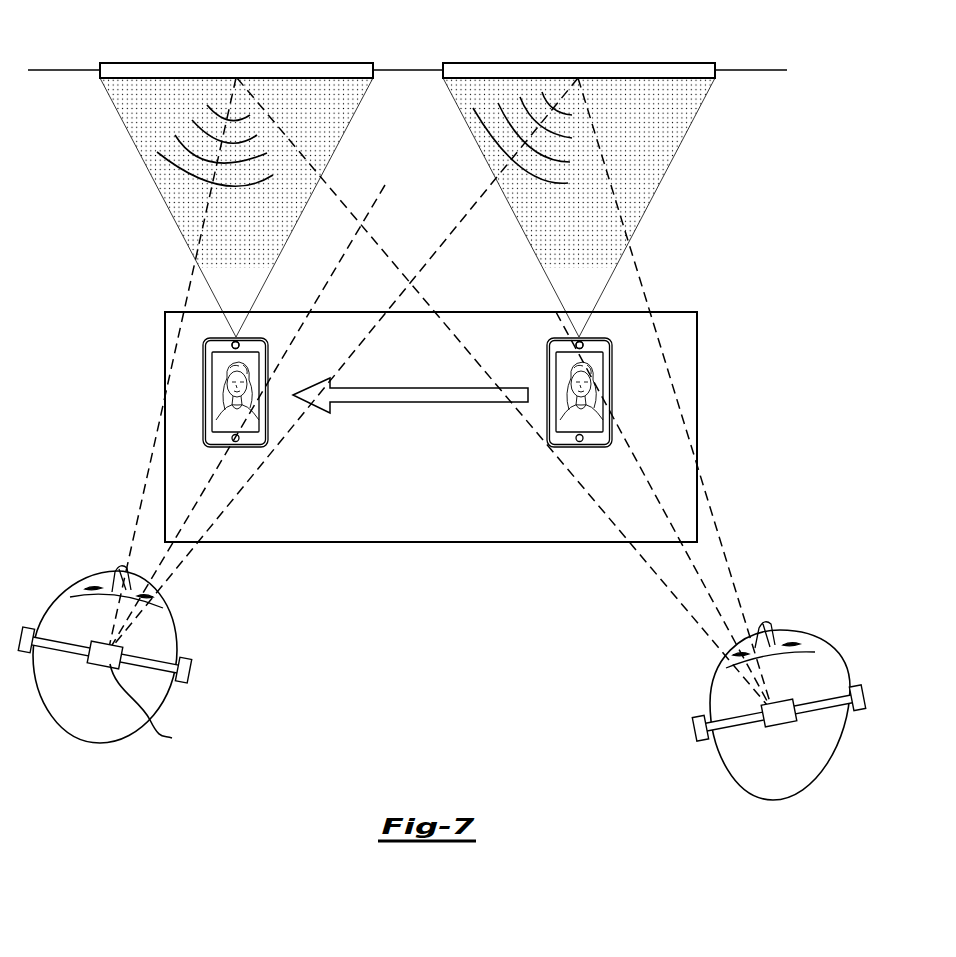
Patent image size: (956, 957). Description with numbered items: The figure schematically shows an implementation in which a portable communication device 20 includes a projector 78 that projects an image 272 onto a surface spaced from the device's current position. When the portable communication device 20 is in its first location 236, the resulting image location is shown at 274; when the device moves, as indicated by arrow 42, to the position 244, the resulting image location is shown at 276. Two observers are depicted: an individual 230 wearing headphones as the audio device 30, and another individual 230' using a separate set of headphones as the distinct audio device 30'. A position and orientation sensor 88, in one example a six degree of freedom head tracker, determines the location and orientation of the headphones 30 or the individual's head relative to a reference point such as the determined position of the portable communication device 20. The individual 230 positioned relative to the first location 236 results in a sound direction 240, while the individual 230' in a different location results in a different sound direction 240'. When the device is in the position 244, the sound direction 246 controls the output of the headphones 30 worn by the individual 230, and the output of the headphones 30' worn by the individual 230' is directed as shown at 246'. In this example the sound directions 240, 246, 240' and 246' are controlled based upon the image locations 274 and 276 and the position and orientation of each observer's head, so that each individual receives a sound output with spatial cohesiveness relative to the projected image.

The image 272 is at (152, 63).
The image location 276 is at (130, 88).
The image location 274 is at (677, 84).
The sound direction 246 is at (172, 365).
The sound direction 246' is at (282, 418).
The sound direction 240 is at (343, 365).
The sound direction 240' is at (680, 395).
The video projector 78 is at (237, 340).
The movement direction arrow 42 is at (405, 388).
The portable communication device 20 is at (269, 432).
The position 244 is at (253, 460).
The first location 236 is at (580, 455).
The individual 230 is at (146, 654).
The individual 230' is at (729, 711).
The audio device 30 is at (137, 656).
The audio device 30' is at (745, 717).
The position and orientation sensor 88 is at (151, 706).